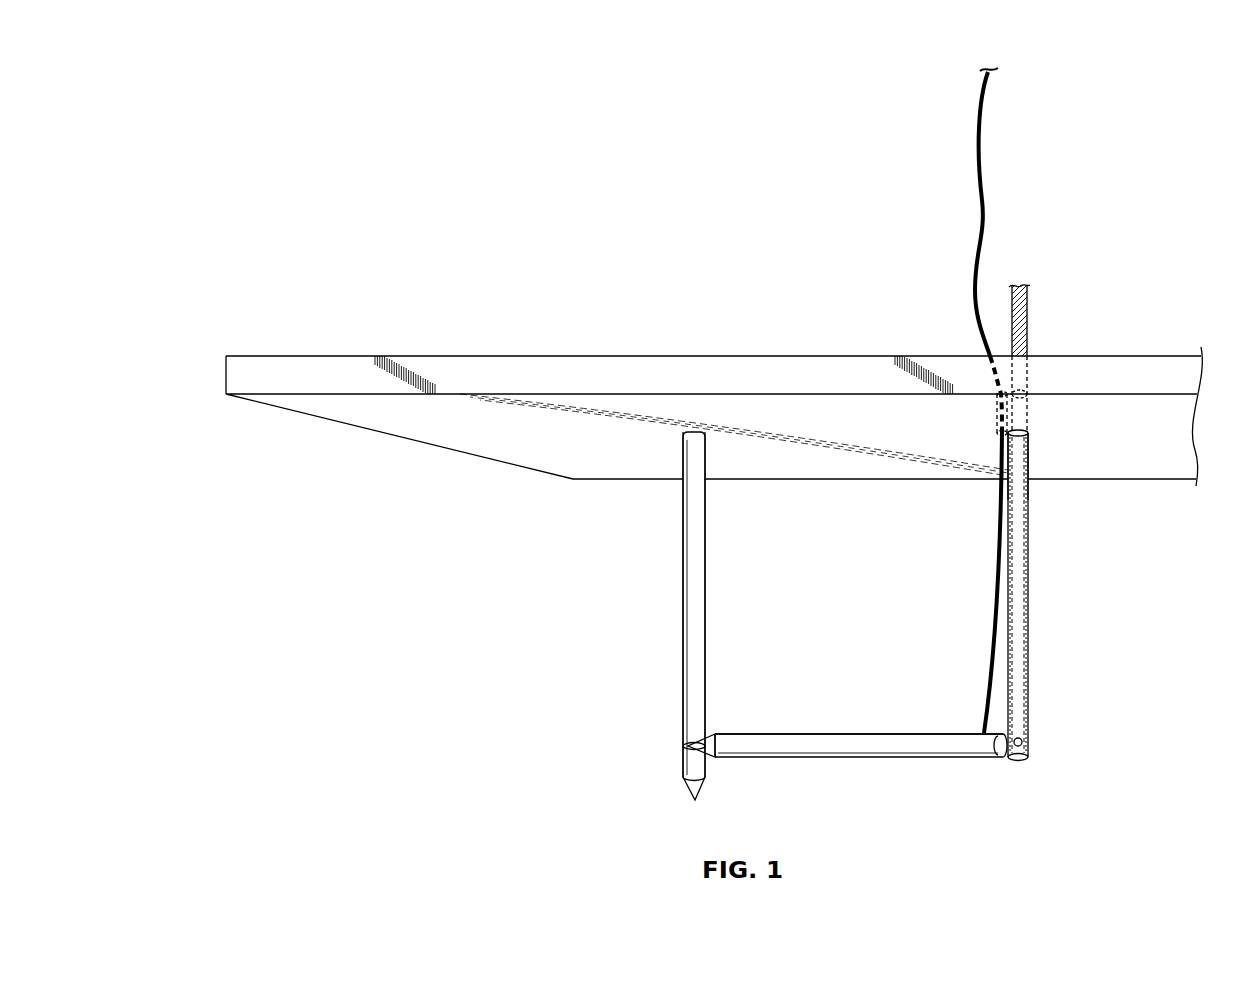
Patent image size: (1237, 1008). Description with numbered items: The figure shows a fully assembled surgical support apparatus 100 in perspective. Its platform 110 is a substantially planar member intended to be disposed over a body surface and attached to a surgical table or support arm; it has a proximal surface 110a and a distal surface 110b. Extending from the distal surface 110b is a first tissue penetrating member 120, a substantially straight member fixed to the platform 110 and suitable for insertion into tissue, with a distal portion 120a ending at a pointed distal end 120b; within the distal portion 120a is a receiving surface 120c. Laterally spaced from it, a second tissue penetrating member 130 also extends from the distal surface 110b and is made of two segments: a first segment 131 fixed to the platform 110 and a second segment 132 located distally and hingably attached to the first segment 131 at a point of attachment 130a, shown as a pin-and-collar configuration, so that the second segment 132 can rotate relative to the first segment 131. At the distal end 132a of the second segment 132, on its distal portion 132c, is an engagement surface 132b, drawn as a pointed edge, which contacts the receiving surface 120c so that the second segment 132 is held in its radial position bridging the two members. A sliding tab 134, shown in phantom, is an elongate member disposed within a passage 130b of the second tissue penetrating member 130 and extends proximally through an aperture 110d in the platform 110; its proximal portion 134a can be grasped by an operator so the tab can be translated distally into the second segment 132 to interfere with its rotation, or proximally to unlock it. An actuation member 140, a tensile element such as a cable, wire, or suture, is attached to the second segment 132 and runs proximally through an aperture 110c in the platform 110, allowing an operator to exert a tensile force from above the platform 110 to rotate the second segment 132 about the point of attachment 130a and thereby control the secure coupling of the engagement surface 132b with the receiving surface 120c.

The surgical support apparatus 100 is at (364, 120).
The platform 110 is at (226, 378).
The proximal surface 110a is at (330, 355).
The distal surface 110b is at (372, 413).
The aperture 110c is at (1002, 437).
The aperture 110d is at (1027, 395).
The tissue penetrating member 120 is at (636, 597).
The distal portion 120a is at (658, 703).
The distal end 120b is at (695, 797).
The receiving surface 120c is at (690, 748).
The tissue penetrating member 130 is at (1094, 614).
The point of attachment 130a is at (1022, 745).
The passage 130b is at (1028, 490).
The first segment 131 is at (1028, 557).
The second segment 132 is at (861, 758).
The distal end 132a is at (715, 757).
The engagement surface 132b is at (702, 742).
The distal portion 132c is at (846, 726).
The sliding tab 134 is at (1028, 648).
The proximal portion 134a is at (1027, 320).
The actuation member 140 is at (990, 636).